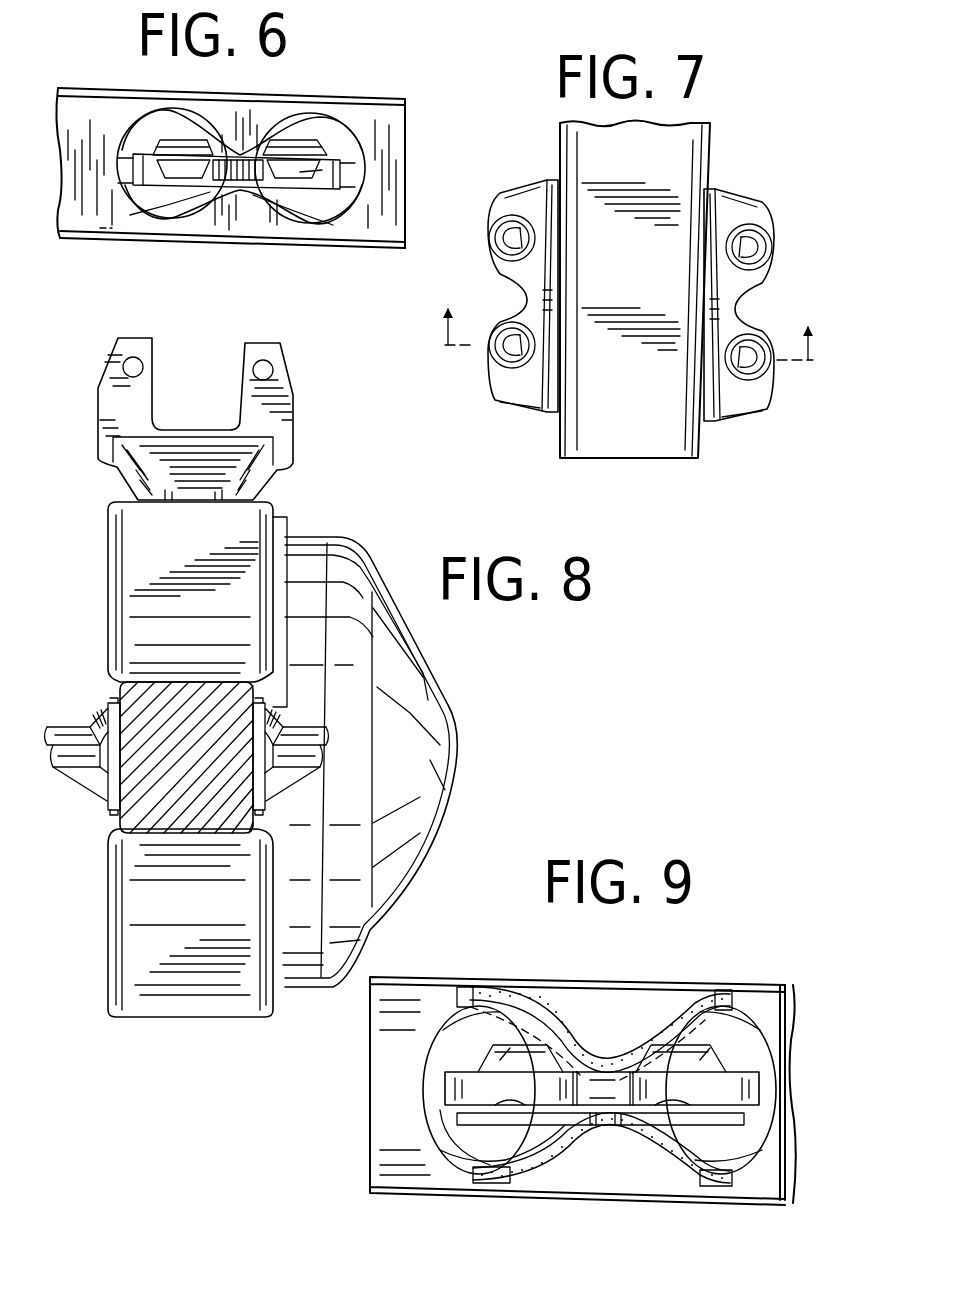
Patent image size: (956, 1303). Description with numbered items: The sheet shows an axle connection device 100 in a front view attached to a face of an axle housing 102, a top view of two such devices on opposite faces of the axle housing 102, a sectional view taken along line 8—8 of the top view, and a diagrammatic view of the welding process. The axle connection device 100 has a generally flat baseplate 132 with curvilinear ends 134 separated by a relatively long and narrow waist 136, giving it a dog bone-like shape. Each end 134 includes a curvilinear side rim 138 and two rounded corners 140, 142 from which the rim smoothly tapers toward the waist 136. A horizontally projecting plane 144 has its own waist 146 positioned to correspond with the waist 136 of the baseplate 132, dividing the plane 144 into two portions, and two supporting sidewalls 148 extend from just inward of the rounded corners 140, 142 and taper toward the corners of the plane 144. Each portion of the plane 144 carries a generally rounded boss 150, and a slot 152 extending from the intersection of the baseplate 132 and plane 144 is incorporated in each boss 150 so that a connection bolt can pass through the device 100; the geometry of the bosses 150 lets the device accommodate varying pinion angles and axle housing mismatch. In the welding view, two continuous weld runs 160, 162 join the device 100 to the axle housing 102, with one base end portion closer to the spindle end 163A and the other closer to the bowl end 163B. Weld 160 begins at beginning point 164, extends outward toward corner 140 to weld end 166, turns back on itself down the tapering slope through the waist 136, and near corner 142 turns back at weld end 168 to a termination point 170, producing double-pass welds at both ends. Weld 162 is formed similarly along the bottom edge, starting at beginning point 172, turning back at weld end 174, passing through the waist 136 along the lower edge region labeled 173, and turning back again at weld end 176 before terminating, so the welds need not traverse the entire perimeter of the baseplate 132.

In FIG. 6, the axle connection device 100 is at (342, 95).
In FIG. 7, the axle connection device 100 is at (512, 155).
In FIG. 8, the axle connection device 100 is at (341, 716).
In FIG. 6, the axle housing 102 is at (95, 93).
In FIG. 7, the axle housing 102 is at (635, 290).
In FIG. 8, the axle housing 102 is at (121, 947).
In FIG. 9, the axle housing 102 is at (760, 985).
In FIG. 6, the baseplate 132 is at (300, 130).
In FIG. 8, the baseplate 132 is at (116, 807).
In FIG. 9, the baseplate 132 is at (463, 1027).
In FIG. 6, the curvilinear ends 134 is at (170, 207).
In FIG. 6, the waist 136 is at (250, 193).
In FIG. 9, the waist 136 is at (595, 1060).
In FIG. 6, the curvilinear side rim 138 is at (110, 160).
In FIG. 6, the rounded corner 140 is at (130, 107).
In FIG. 9, the rounded corner 140 is at (434, 1010).
In FIG. 6, the rounded corner 142 is at (132, 213).
In FIG. 9, the rounded corner 142 is at (746, 1005).
In FIG. 6, the horizontally projecting plane 144 is at (327, 173).
In FIG. 7, the waist 146 is at (508, 280).
In FIG. 7, the supporting sidewalls 148 is at (527, 187).
In FIG. 9, the supporting sidewalls 148 is at (442, 1098).
In FIG. 7, the rounded boss 150 is at (773, 257).
In FIG. 8, the rounded boss 150 is at (95, 725).
In FIG. 9, the rounded boss 150 is at (470, 1065).
In FIG. 7, the slot 152 is at (752, 247).
In FIG. 7, the section line 8- 8 is at (627, 349).
In FIG. 9, the weld run 160 is at (686, 1002).
In FIG. 9, the weld run 162 is at (565, 1170).
In FIG. 9, the spindle end 163A is at (370, 1062).
In FIG. 9, the bowl end 163B is at (792, 1012).
In FIG. 9, the beginning point 164 is at (493, 995).
In FIG. 9, the weld end 166 is at (468, 995).
In FIG. 9, the weld end 168 is at (742, 990).
In FIG. 9, the weld termination point 170 is at (718, 1005).
In FIG. 9, the beginning point 172 is at (510, 1172).
In FIG. 9, the lower strap right segment 173 is at (695, 1175).
In FIG. 9, the weld end 174 is at (455, 1170).
In FIG. 9, the weld end 176 is at (745, 1180).